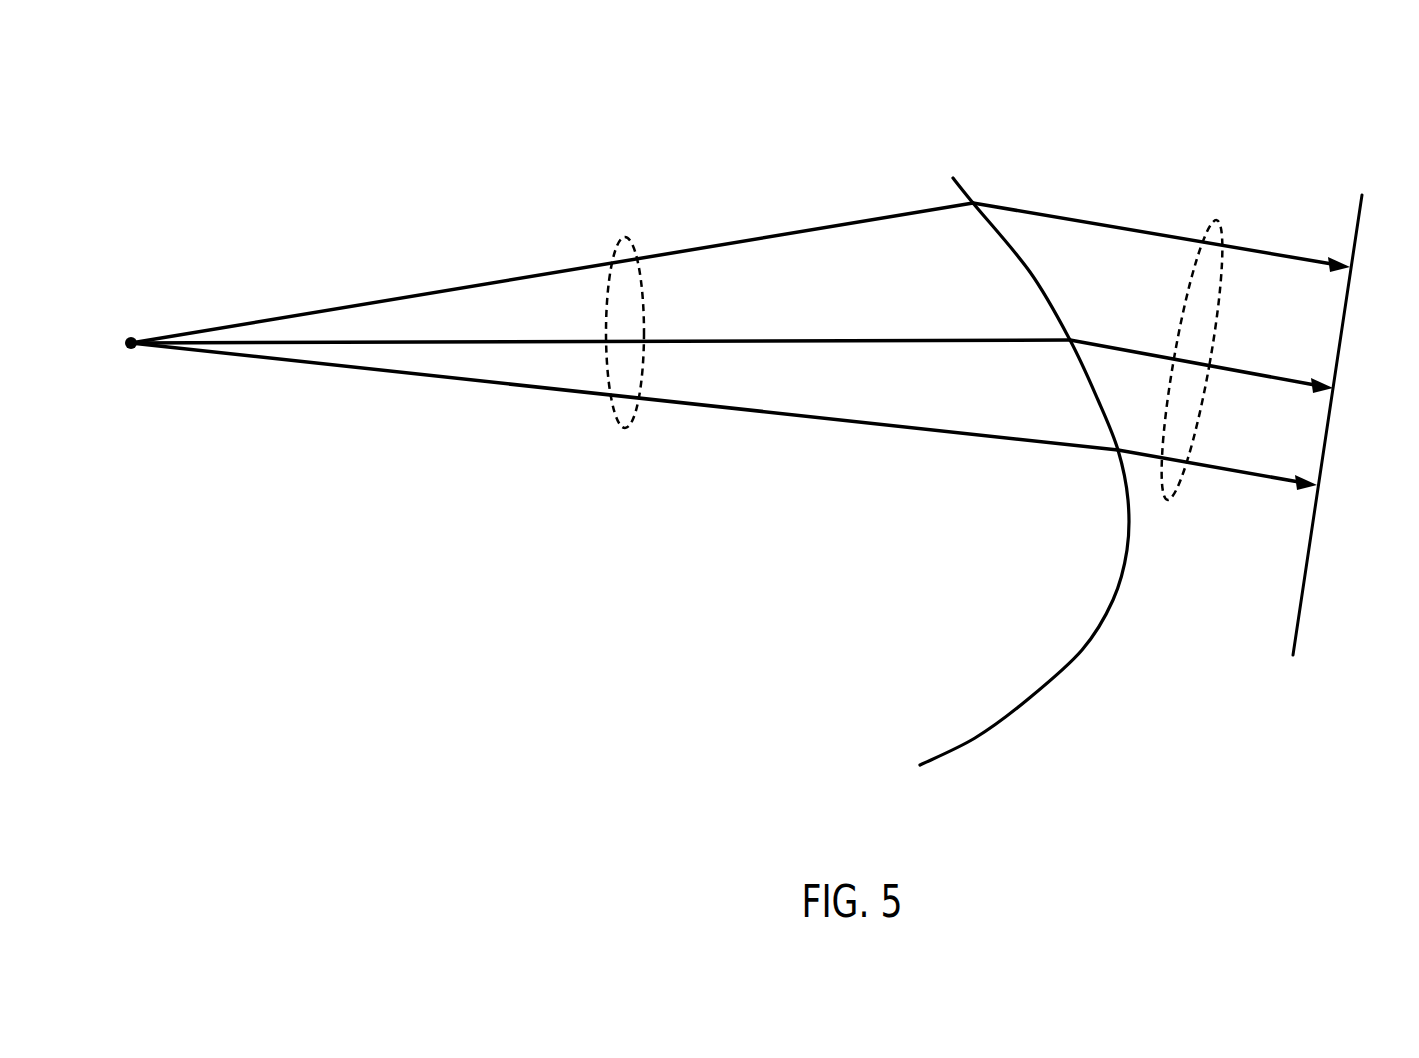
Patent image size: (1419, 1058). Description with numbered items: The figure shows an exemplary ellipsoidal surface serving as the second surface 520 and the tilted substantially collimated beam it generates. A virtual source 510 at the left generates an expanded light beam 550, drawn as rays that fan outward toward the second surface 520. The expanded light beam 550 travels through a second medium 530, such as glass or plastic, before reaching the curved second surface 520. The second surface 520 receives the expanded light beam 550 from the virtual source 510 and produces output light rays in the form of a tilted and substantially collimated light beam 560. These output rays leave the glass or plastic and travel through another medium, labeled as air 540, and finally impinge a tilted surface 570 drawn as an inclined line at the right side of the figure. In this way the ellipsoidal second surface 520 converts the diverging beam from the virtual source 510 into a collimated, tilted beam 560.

The virtual source 510 is at (132, 287).
The second surface 520 is at (1008, 718).
The second medium 530 is at (781, 589).
The air 540 is at (1171, 686).
The expanded light beam 550 is at (626, 237).
The tilted substantially collimated light beam 560 is at (1217, 220).
The tilted surface 570 is at (1350, 375).